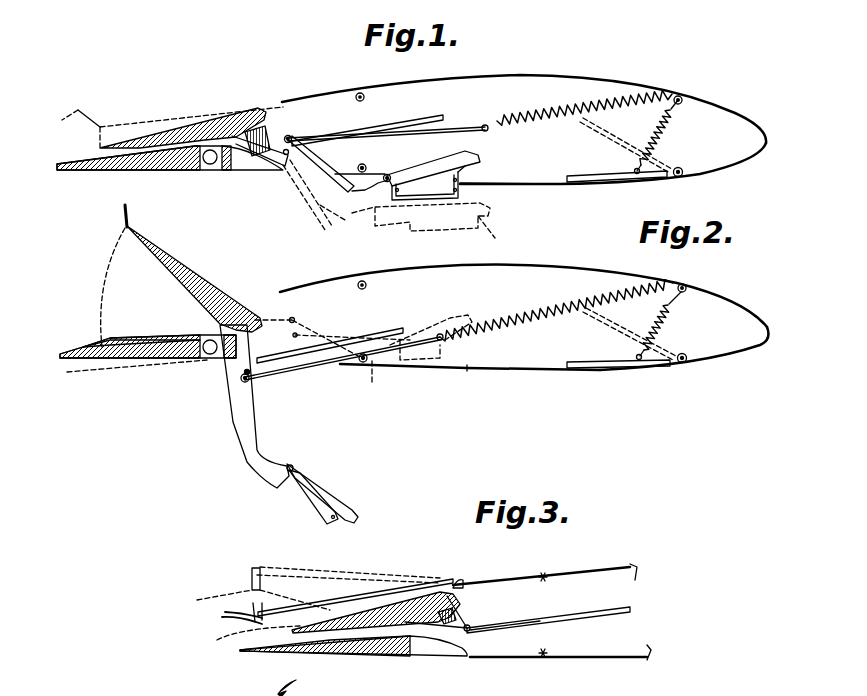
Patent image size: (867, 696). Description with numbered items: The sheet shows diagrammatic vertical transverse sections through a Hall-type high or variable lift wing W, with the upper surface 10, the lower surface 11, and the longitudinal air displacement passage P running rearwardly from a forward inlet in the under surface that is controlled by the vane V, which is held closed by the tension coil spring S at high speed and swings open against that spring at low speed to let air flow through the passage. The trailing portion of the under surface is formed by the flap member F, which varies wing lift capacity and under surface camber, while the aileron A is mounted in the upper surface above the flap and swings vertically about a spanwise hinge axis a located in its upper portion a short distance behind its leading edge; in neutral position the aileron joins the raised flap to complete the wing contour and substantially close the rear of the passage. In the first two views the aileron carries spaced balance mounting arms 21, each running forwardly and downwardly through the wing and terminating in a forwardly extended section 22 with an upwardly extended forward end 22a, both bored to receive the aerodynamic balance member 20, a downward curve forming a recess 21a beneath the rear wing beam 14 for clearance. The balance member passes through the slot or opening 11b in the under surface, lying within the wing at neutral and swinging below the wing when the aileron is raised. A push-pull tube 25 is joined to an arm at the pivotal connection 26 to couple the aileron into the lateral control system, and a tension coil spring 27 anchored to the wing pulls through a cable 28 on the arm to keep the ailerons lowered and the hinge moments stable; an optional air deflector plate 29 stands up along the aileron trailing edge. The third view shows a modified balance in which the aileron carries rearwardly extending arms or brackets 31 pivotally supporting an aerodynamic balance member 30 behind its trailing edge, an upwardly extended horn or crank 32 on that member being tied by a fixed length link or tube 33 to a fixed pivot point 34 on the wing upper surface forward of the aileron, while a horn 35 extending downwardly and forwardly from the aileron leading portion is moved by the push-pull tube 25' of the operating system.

In FIG. 1, the upper surface 10 is at (517, 75).
In FIG. 2, the upper surface 10 is at (423, 268).
In FIG. 2, the lower surface 11 is at (520, 371).
In FIG. 1, the slot or opening 11b is at (507, 187).
In FIG. 2, the slot or opening 11b is at (467, 367).
In FIG. 1, the rear wing beam 14 is at (367, 163).
In FIG. 1, the aerodynamic balance member 20 is at (420, 167).
In FIG. 2, the aerodynamic balance member 20 is at (323, 480).
In FIG. 1, the balance mounting arm 21 is at (322, 180).
In FIG. 2, the balance mounting arm 21 is at (250, 407).
In FIG. 1, the recess 21a is at (345, 220).
In FIG. 2, the recess 21a is at (372, 382).
In FIG. 1, the forwardly extended section 22 is at (467, 187).
In FIG. 2, the forwardly extended section 22 is at (307, 503).
In FIG. 1, the upwardly extended forward end 22a is at (480, 168).
In FIG. 2, the upwardly extended forward end 22a is at (335, 520).
In FIG. 1, the push-pull tube 25 is at (367, 122).
In FIG. 2, the push-pull tube 25 is at (337, 332).
In FIG. 3, the push-pull tube 25' is at (522, 631).
In FIG. 1, the pivotal connection 26 is at (292, 136).
In FIG. 2, the pivotal connection 26 is at (247, 372).
In FIG. 1, the tension coil spring 27 is at (580, 102).
In FIG. 2, the tension coil spring 27 is at (545, 318).
In FIG. 1, the cable 28 is at (481, 124).
In FIG. 2, the cable 28 is at (293, 370).
In FIG. 1, the air deflector plate 29 is at (78, 120).
In FIG. 2, the air deflector plate 29 is at (130, 206).
In FIG. 3, the aerodynamic balance member 30 is at (222, 617).
In FIG. 3, the arm or bracket 31 is at (243, 633).
In FIG. 3, the horn or crank 32 is at (252, 583).
In FIG. 3, the fixed length link or tube 33 is at (343, 600).
In FIG. 3, the fixed pivot point 34 is at (463, 582).
In FIG. 3, the horn 35 is at (458, 623).
In FIG. 1, the aileron A is at (145, 135).
In FIG. 2, the aileron A is at (177, 256).
In FIG. 3, the aileron A is at (393, 607).
In FIG. 1, the flap member F is at (178, 167).
In FIG. 2, the flap member F is at (63, 354).
In FIG. 3, the flap member F is at (332, 656).
In FIG. 1, the air displacement passage P is at (386, 116).
In FIG. 2, the air displacement passage P is at (354, 334).
In FIG. 3, the air displacement passage P is at (548, 608).
In FIG. 1, the tension coil spring S is at (660, 138).
In FIG. 2, the tension coil spring S is at (668, 327).
In FIG. 1, the vane V is at (593, 178).
In FIG. 2, the vane V is at (580, 363).
In FIG. 1, the wing W is at (311, 95).
In FIG. 2, the wing W is at (727, 298).
In FIG. 3, the wing W is at (600, 567).
In FIG. 1, the hinge or pivotal axis a is at (230, 118).